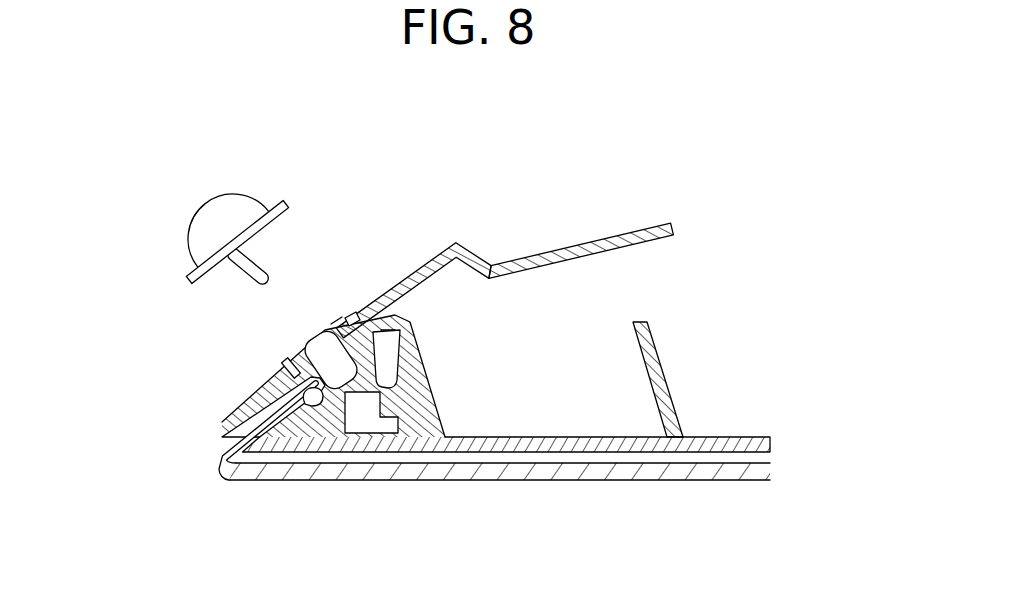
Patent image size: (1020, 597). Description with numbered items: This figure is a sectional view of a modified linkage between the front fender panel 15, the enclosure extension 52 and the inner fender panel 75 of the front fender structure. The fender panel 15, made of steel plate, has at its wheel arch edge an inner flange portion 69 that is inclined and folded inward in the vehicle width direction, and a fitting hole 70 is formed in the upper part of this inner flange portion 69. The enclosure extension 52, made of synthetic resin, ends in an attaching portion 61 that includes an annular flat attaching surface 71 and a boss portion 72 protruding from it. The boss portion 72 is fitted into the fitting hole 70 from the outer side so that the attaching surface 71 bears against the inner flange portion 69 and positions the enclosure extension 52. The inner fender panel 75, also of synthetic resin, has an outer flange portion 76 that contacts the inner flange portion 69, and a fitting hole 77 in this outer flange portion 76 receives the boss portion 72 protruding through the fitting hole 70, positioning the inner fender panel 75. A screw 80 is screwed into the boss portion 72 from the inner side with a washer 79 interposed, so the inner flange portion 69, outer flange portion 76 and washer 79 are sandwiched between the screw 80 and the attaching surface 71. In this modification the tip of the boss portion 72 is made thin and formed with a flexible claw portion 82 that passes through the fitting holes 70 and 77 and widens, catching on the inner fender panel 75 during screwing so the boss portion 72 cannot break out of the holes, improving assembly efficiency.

The front fender panel 15 is at (491, 480).
The enclosure extension 52 is at (585, 452).
The attaching portion 61 is at (427, 268).
The inner flange portion 69 is at (222, 428).
The fitting hole 70 is at (312, 400).
The attaching surface 71 is at (381, 330).
The boss portion 72 is at (290, 350).
The inner fender panel 75 is at (569, 246).
The outer flange portion 76 is at (409, 322).
The fitting hole 77 is at (331, 324).
The washer 79 is at (188, 280).
The screw 80 is at (205, 211).
The flexible claw portion 82 is at (288, 375).